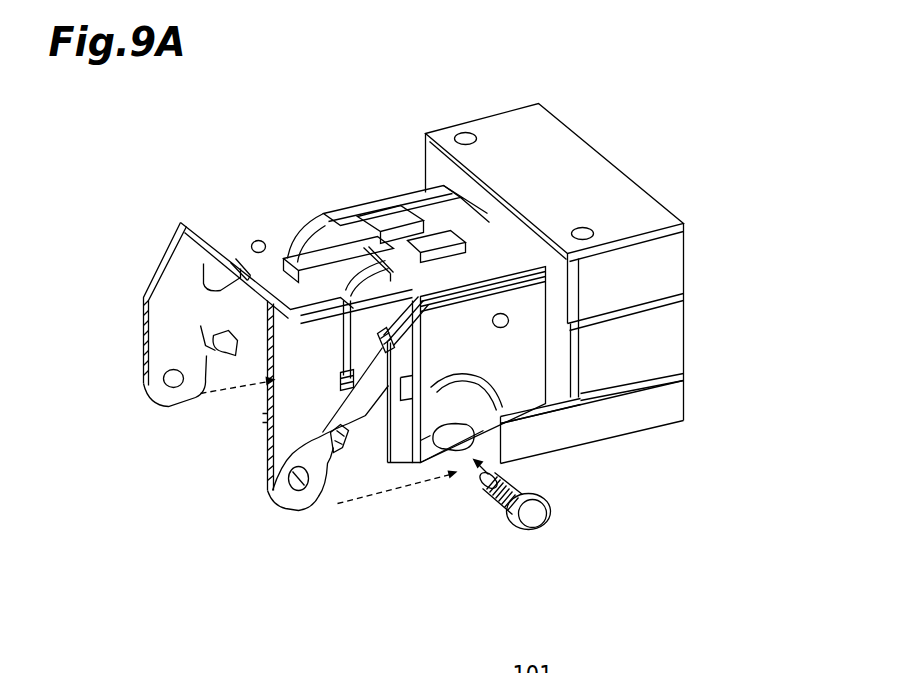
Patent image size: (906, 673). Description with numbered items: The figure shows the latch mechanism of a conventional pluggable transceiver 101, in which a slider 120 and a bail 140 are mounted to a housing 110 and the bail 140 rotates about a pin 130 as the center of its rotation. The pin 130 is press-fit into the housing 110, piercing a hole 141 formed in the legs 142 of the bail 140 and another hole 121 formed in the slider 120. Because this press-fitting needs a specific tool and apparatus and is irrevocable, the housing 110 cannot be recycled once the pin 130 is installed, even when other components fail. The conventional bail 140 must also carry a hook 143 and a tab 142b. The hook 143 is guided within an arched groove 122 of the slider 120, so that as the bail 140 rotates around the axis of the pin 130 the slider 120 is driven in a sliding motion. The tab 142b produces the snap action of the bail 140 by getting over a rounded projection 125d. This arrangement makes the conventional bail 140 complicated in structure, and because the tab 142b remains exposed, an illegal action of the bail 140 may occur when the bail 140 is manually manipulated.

The pluggable transceiver 101 is at (512, 82).
The housing 110 is at (424, 370).
The slider 120 is at (676, 358).
The hole 121 is at (458, 452).
The arched groove 122 is at (430, 452).
The rounded projection 125d is at (513, 318).
The pin 130 is at (537, 514).
The bail 140 is at (230, 398).
The hole 141 is at (173, 388).
The legs 142 is at (156, 330).
The tab 142b is at (258, 240).
The hook 143 is at (210, 327).